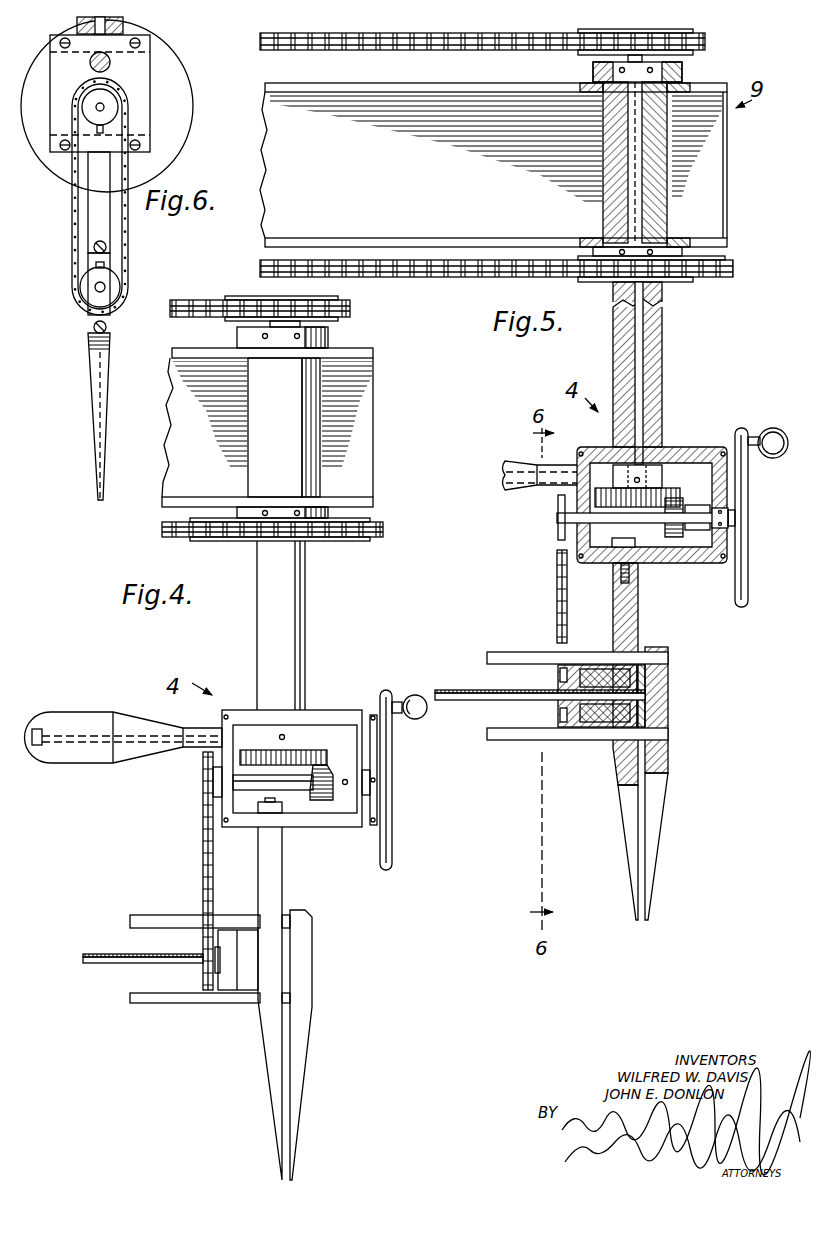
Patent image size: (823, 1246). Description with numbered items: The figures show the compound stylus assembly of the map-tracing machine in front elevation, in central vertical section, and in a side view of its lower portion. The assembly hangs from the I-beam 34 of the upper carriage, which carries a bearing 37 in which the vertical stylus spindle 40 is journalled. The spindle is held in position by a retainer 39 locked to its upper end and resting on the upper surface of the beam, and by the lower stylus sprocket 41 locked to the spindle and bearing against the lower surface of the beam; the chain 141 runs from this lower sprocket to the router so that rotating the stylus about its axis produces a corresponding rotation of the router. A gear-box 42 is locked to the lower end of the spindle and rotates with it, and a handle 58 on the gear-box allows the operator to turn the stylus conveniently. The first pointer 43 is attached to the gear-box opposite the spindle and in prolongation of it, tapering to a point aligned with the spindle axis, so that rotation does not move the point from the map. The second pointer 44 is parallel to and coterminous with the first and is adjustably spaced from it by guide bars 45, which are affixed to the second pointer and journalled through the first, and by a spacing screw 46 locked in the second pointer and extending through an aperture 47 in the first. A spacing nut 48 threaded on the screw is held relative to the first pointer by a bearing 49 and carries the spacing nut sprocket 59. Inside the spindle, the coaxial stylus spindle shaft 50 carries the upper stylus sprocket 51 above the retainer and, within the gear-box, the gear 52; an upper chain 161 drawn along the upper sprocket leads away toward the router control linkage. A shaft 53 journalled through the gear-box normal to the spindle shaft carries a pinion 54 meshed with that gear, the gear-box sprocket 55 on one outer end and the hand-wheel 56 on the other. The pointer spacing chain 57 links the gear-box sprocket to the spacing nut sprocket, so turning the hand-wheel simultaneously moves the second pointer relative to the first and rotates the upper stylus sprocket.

In FIG. 4, the I-beam 34 is at (365, 478).
In FIG. 5, the I-beam 34 is at (712, 153).
In FIG. 4, the bearing 37 is at (284, 427).
In FIG. 5, the bearing 37 is at (668, 120).
In FIG. 4, the retainer 39 is at (328, 336).
In FIG. 5, the retainer 39 is at (682, 70).
In FIG. 6, the stylus spindle 40 is at (125, 25).
In FIG. 4, the stylus spindle 40 is at (306, 652).
In FIG. 5, the stylus spindle 40 is at (662, 357).
In FIG. 4, the lower stylus sprocket 41 is at (370, 519).
In FIG. 5, the lower stylus sprocket 41 is at (725, 258).
In FIG. 6, the gear-box 42 is at (44, 147).
In FIG. 4, the gear-box 42 is at (340, 710).
In FIG. 5, the gear-box 42 is at (690, 449).
In FIG. 6, the first pointer 43 is at (95, 223).
In FIG. 4, the first pointer 43 is at (270, 1052).
In FIG. 5, the first pointer 43 is at (622, 797).
In FIG. 4, the second pointer 44 is at (322, 1072).
In FIG. 5, the second pointer 44 is at (660, 815).
In FIG. 6, the guide bars 45 is at (94, 249).
In FIG. 4, the guide bars 45 is at (156, 915).
In FIG. 5, the guide bars 45 is at (522, 652).
In FIG. 6, the spacing screw 46 is at (93, 290).
In FIG. 4, the spacing screw 46 is at (96, 964).
In FIG. 5, the spacing screw 46 is at (485, 701).
In FIG. 5, the aperture 47 is at (648, 682).
In FIG. 5, the spacing nut 48 is at (578, 740).
In FIG. 6, the bearing 49 is at (120, 271).
In FIG. 4, the bearing 49 is at (228, 991).
In FIG. 5, the bearing 49 is at (585, 665).
In FIG. 6, the stylus spindle shaft 50 is at (77, 25).
In FIG. 5, the stylus spindle shaft 50 is at (643, 377).
In FIG. 4, the upper stylus sprocket 51 is at (338, 298).
In FIG. 5, the upper stylus sprocket 51 is at (693, 30).
In FIG. 4, the gear 52 is at (311, 760).
In FIG. 5, the gear 52 is at (660, 496).
In FIG. 6, the shaft 53 is at (104, 107).
In FIG. 5, the shaft 53 is at (637, 555).
In FIG. 4, the pinion 54 is at (325, 802).
In FIG. 5, the pinion 54 is at (695, 562).
In FIG. 6, the gear-box sprocket 55 is at (112, 113).
In FIG. 4, the gear-box sprocket 55 is at (205, 783).
In FIG. 5, the gear-box sprocket 55 is at (558, 508).
In FIG. 6, the hand-wheel 56 is at (172, 154).
In FIG. 4, the hand-wheel 56 is at (393, 784).
In FIG. 5, the hand-wheel 56 is at (748, 592).
In FIG. 6, the pointer spacing chain 57 is at (128, 248).
In FIG. 4, the pointer spacing chain 57 is at (203, 863).
In FIG. 5, the pointer spacing chain 57 is at (557, 601).
In FIG. 6, the handle 58 is at (92, 65).
In FIG. 4, the handle 58 is at (148, 708).
In FIG. 5, the handle 58 is at (525, 490).
In FIG. 6, the spacing nut sprocket 59 is at (120, 292).
In FIG. 4, the spacing nut sprocket 59 is at (210, 975).
In FIG. 5, the spacing nut sprocket 59 is at (560, 681).
In FIG. 4, the chain 141 is at (165, 538).
In FIG. 5, the chain 141 is at (478, 280).
In FIG. 4, the upper rail 161 is at (208, 299).
In FIG. 5, the upper rail 161 is at (478, 52).